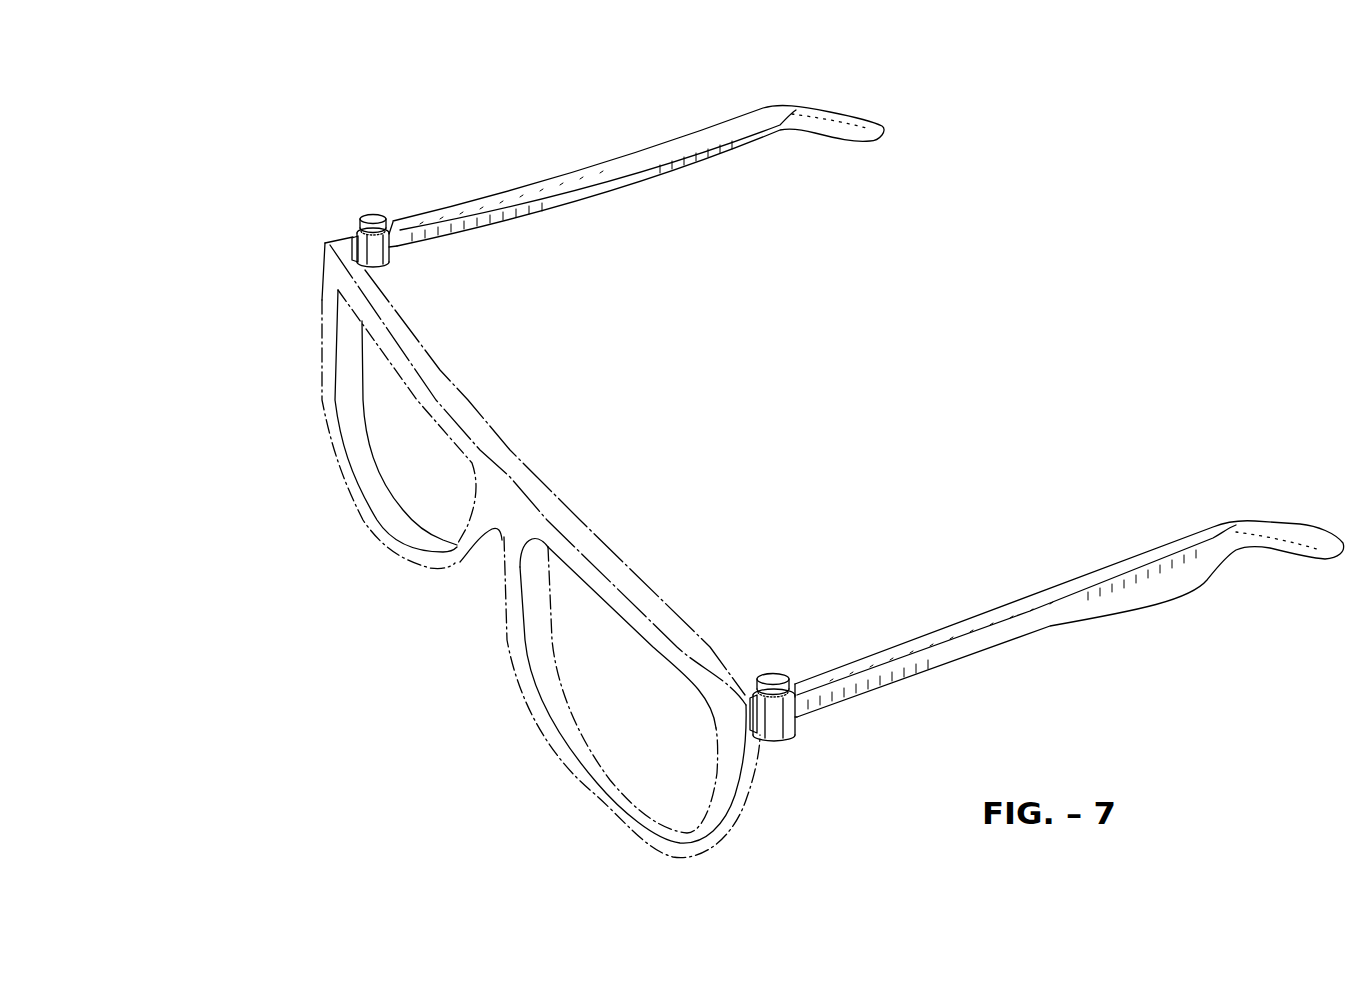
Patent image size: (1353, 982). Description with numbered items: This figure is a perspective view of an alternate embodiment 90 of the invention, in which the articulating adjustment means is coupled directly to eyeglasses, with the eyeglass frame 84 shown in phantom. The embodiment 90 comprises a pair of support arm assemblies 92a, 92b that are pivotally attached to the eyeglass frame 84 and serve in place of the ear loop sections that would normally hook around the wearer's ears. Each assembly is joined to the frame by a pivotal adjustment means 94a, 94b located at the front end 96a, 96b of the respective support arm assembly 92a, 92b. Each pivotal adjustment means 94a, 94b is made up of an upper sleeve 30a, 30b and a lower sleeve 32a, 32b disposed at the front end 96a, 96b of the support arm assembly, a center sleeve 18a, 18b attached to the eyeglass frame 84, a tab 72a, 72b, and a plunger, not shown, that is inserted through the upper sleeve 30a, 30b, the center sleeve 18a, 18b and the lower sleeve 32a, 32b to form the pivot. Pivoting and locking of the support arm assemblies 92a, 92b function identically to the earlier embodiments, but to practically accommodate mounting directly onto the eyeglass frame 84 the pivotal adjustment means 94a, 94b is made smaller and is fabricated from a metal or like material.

The alternate embodiment 90 is at (214, 147).
The eyeglass frame 84 is at (318, 353).
The support arm assembly 92a is at (1084, 542).
The support arm assembly 92b is at (578, 129).
The front end 96a is at (800, 653).
The front end 96b is at (377, 184).
The tab 72a is at (776, 672).
The tab 72b is at (370, 216).
The upper sleeve 30a is at (752, 700).
The upper sleeve 30b is at (393, 230).
The center sleeve 18a is at (793, 726).
The center sleeve 18b is at (398, 251).
The pivotal adjustment means 94a is at (812, 747).
The pivotal adjustment means 94b is at (413, 272).
The lower sleeve 32a is at (780, 742).
The lower sleeve 32b is at (388, 266).